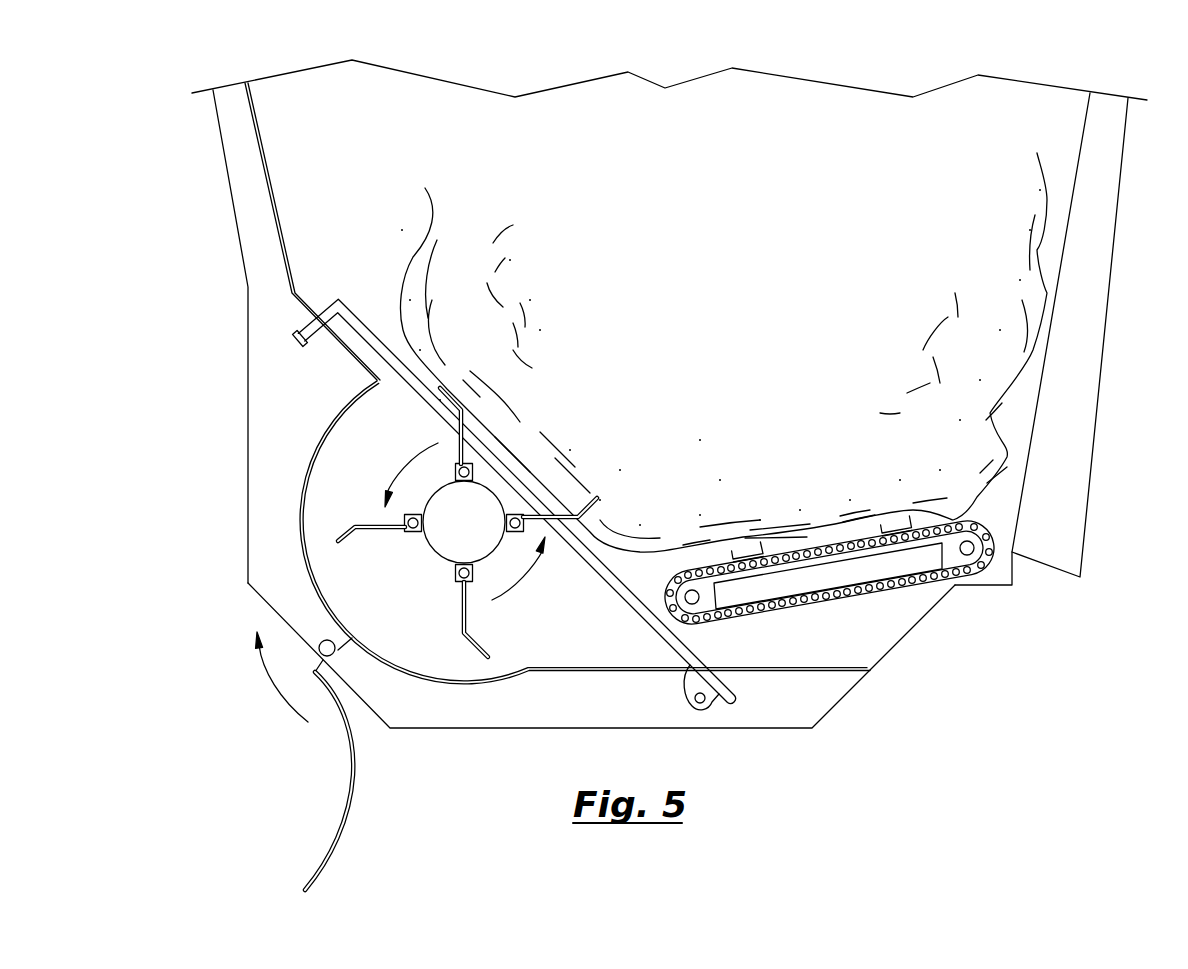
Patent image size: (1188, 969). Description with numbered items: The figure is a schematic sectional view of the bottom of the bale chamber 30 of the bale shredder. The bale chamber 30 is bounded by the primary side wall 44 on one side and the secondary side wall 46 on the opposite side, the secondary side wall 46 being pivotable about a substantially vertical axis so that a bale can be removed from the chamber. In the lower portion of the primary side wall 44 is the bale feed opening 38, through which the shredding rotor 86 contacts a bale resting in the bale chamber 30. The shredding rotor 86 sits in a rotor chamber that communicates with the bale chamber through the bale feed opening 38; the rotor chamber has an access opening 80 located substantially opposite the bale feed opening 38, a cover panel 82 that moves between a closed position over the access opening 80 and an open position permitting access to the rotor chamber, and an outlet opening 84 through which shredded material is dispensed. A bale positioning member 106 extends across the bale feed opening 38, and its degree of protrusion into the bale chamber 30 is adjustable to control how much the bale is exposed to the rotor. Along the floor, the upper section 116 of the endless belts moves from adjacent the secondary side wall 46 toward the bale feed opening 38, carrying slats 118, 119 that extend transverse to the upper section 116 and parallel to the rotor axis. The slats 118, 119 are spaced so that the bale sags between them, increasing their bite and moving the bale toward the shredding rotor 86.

The bale chamber 30 is at (997, 167).
The bale feed opening 38 is at (432, 428).
The primary side wall 44 is at (260, 163).
The secondary side wall 46 is at (1073, 323).
The access opening 80 is at (307, 588).
The cover panel 82 is at (355, 790).
The outlet opening 84 is at (822, 625).
The shredding rotor 86 is at (382, 477).
The bale positioning member 106 is at (352, 323).
The upper section of endless belt 116 is at (972, 524).
The slat 118 is at (735, 552).
The slat 119 is at (885, 525).